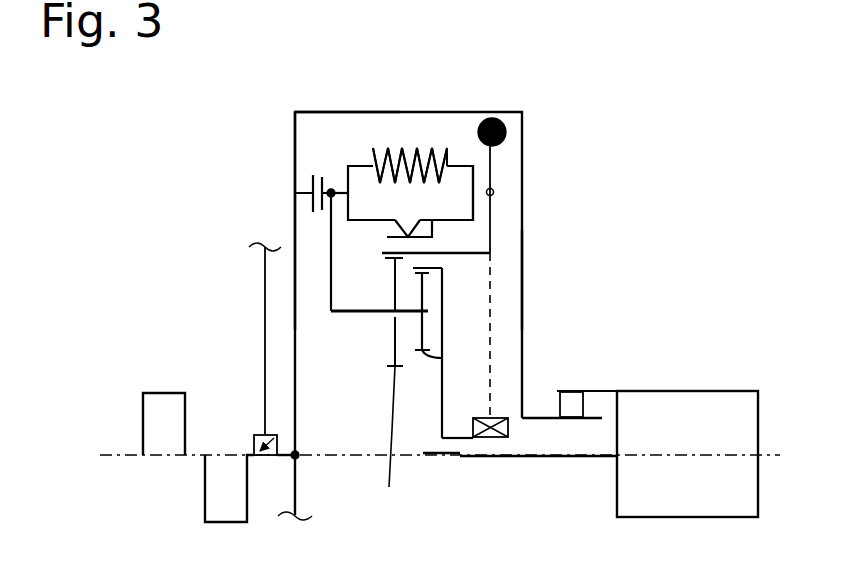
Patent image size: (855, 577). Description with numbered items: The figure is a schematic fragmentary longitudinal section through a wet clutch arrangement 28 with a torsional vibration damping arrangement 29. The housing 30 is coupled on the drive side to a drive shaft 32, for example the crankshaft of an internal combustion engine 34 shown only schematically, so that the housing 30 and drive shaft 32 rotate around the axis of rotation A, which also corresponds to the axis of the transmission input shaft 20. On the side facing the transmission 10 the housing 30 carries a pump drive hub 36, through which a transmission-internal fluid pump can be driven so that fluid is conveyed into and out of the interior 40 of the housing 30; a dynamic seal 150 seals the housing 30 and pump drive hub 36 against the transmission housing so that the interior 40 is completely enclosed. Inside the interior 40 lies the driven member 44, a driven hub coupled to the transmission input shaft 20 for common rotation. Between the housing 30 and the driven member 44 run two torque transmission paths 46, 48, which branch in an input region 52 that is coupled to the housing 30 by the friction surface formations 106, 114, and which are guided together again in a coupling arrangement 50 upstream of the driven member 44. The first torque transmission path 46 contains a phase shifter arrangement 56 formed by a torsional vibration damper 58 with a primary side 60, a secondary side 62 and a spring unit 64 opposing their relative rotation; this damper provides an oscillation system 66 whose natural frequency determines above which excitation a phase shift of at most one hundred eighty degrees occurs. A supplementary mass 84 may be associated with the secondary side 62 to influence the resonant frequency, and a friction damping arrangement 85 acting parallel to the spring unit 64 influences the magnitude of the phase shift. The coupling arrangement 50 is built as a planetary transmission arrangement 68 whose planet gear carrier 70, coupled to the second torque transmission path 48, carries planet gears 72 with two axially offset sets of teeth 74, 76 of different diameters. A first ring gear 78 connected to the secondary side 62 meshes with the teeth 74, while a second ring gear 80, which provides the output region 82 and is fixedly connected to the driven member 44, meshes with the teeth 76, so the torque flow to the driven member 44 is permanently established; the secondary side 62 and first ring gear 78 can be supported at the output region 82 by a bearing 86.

The transmission 10 is at (722, 391).
The transmission input shaft 20 is at (591, 457).
The wet clutch arrangement 28 is at (574, 123).
The torsional vibration damping arrangement 29 is at (317, 265).
The housing 30 is at (426, 207).
The drive shaft 32 is at (143, 412).
The internal combustion engine 34 is at (265, 322).
The pump drive hub 36 is at (534, 416).
The interior 40 is at (524, 268).
The driven member 44 is at (456, 455).
The first torque transmission path 46 is at (355, 128).
The second torque transmission path 48 is at (321, 237).
The coupling arrangement 50 is at (376, 396).
The input region 52 is at (329, 181).
The phase shifter arrangement 56 is at (426, 134).
The torsional vibration damper 58 is at (402, 150).
The primary side 60 is at (358, 165).
The secondary side 62 is at (476, 170).
The spring unit 64 is at (503, 120).
The oscillation system 66 is at (328, 128).
The planetary transmission arrangement 68 is at (414, 399).
The planet gear carrier 70 is at (331, 296).
The planet gears 72 is at (393, 325).
The teeth 74 is at (387, 474).
The teeth 76 is at (444, 357).
The first ring gear 78 is at (462, 252).
The second ring gear 80 is at (446, 275).
The output region 82 is at (444, 318).
The supplementary mass 84 is at (527, 112).
The friction damping arrangement 85 is at (495, 191).
The bearing 86 is at (509, 428).
The friction surface formation 106 is at (312, 180).
The friction surface formation 114 is at (298, 193).
The dynamic seal 150 is at (574, 408).
The axis of rotation A is at (781, 456).